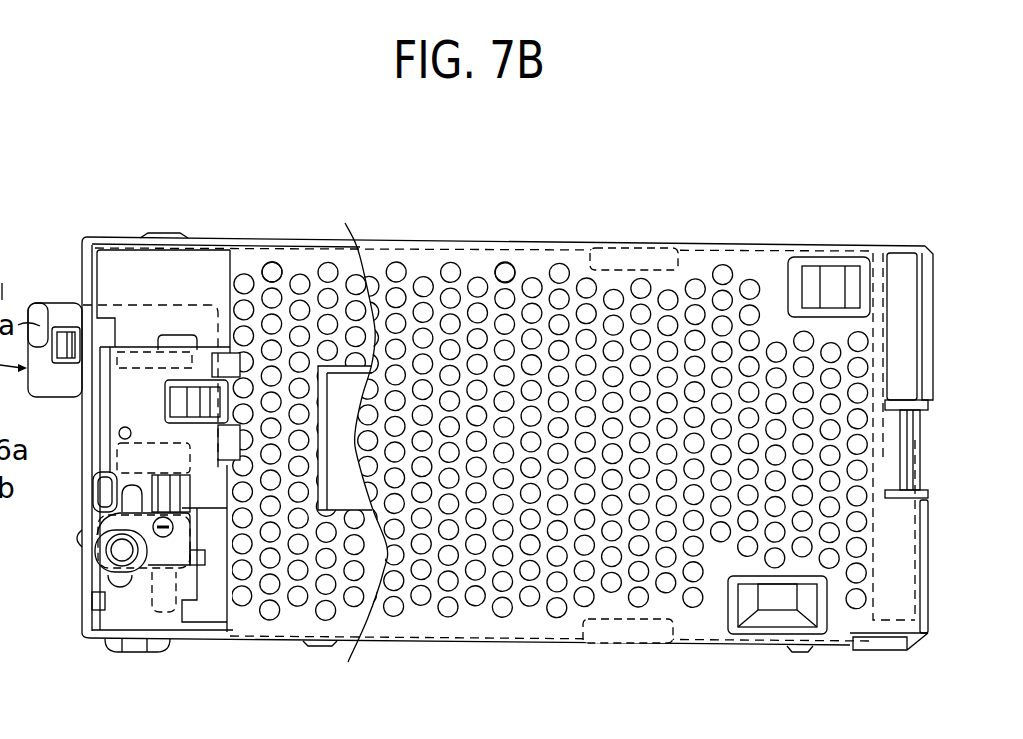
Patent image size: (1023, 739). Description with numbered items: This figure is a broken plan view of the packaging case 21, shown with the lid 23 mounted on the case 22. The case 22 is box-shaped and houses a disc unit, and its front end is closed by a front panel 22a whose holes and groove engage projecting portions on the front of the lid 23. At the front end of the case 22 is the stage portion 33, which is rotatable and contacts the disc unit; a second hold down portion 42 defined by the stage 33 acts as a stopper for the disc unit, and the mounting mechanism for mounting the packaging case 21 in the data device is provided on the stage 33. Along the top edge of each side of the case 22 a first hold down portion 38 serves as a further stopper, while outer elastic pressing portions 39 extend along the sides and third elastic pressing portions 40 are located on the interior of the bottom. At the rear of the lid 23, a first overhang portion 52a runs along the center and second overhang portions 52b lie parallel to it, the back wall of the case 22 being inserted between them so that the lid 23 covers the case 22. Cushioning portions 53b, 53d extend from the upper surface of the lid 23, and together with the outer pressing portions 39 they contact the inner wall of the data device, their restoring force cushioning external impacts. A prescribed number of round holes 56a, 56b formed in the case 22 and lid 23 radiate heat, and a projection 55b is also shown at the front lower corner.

The packaging case 21 is at (462, 176).
The case 22 is at (269, 640).
The front panel 22a is at (84, 262).
The lid 23 is at (438, 632).
The stage portion 33 is at (210, 270).
The first hold down portion 38 is at (632, 249).
The outer elastic pressing portion 39 is at (160, 234).
The third elastic pressing portion 40 is at (345, 380).
The second hold down portion 42 is at (100, 414).
The first overhang portion 52a is at (920, 448).
The second overhang portion 52b is at (933, 322).
The cushioning portion 53b is at (773, 603).
The cushioning portion 53d is at (832, 278).
The projection 55b is at (130, 653).
The round hole 56a is at (272, 262).
The round hole 56b is at (505, 262).